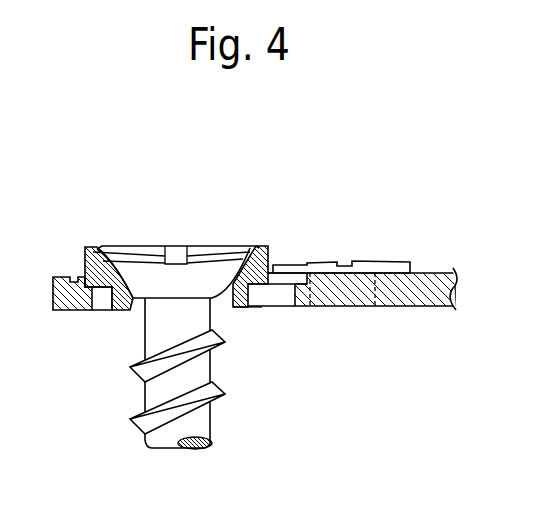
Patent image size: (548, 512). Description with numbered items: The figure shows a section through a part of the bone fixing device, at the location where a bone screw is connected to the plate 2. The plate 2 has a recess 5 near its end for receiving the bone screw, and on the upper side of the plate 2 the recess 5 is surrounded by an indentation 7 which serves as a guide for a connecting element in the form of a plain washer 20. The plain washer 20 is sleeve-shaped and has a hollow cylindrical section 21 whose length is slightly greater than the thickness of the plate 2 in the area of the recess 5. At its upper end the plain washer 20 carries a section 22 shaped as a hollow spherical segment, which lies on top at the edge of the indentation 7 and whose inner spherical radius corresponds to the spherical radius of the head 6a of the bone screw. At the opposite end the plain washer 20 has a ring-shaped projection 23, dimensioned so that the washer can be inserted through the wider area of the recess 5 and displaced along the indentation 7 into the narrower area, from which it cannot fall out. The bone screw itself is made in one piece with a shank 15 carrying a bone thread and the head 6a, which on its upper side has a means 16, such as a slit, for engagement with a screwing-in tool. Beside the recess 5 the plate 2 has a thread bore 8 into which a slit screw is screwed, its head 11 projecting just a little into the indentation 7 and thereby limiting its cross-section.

The plate 2 is at (440, 290).
The recess 5 is at (278, 300).
The head 6a is at (176, 223).
The indentation 7 is at (77, 277).
The thread bore 8 is at (395, 305).
The head 11 is at (363, 261).
The shank 15 is at (185, 299).
The means 16 is at (183, 248).
The plain washer 20 is at (90, 247).
The hollow cylindrical section 21 is at (132, 313).
The section shaped as a hollow spherical segment 22 is at (270, 248).
The ring-shaped projection 23 is at (255, 312).